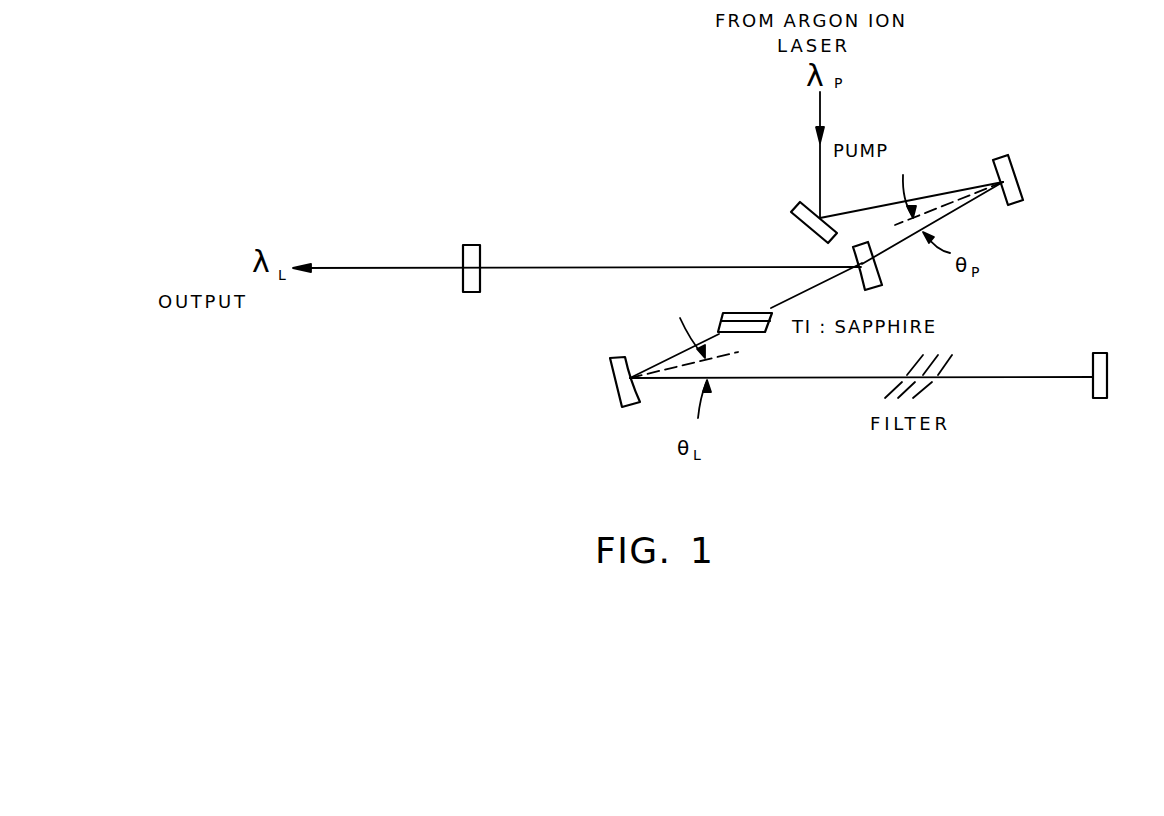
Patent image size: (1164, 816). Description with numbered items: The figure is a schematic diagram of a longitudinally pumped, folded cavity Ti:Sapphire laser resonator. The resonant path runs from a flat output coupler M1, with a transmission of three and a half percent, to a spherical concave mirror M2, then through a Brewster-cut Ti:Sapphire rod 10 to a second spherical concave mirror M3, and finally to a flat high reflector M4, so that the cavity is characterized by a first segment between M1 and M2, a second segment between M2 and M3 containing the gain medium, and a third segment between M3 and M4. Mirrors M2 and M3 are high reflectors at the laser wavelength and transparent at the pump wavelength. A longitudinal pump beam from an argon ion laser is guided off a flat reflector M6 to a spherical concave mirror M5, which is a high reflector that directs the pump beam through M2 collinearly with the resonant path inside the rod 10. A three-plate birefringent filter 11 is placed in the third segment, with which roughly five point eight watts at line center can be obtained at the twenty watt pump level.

The Ti:Sapphire rod 10 is at (724, 305).
The 3-plate birefringent filter 11 is at (958, 354).
The flat output coupler M1 is at (488, 280).
The spherical concave mirror M2 is at (885, 270).
The spherical concave mirror M3 is at (606, 402).
The flat high reflector M4 is at (1119, 386).
The spherical concave mirror M5 is at (1029, 191).
The flat reflector M6 is at (789, 222).